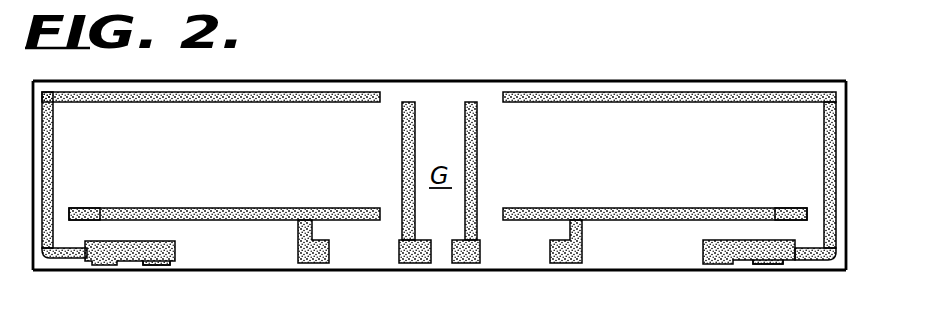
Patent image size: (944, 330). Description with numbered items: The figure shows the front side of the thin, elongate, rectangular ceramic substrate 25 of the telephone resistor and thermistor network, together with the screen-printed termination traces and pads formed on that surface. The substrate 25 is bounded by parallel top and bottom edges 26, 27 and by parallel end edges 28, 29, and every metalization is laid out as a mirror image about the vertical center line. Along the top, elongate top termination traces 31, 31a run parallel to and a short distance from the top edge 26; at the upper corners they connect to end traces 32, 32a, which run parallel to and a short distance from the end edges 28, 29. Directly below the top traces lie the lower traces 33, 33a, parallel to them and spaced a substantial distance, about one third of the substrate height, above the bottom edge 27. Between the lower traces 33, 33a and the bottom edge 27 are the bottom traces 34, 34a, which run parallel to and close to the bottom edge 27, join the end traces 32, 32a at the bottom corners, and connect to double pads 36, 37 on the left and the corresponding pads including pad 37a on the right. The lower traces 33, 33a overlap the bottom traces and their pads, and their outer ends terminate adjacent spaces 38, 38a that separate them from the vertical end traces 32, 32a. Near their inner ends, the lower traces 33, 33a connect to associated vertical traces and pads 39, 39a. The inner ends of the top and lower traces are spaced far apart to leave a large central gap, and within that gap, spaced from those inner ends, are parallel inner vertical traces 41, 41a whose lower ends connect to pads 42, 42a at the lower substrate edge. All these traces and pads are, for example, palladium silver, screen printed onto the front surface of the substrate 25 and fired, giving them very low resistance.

The substrate 25 is at (643, 260).
The top edge 26 is at (607, 81).
The bottom edge 27 is at (540, 273).
The end edge 28 is at (29, 94).
The end edge 29 is at (848, 94).
The top termination trace 31 is at (217, 102).
The top termination trace 31a is at (634, 102).
The end trace 32 is at (54, 141).
The end trace 32a is at (824, 136).
The lower trace 33 is at (243, 208).
The lower trace 33a is at (634, 182).
The bottom trace 34 is at (70, 262).
The bottom trace 34a is at (818, 262).
The pad 36 is at (108, 265).
The pad 37 is at (168, 265).
The pad 37a is at (722, 265).
The space 38 is at (63, 213).
The space 38a is at (816, 212).
The vertical trace and pad 39 is at (315, 263).
The vertical trace and pad 39a is at (571, 263).
The inner vertical trace 41 is at (402, 133).
The inner vertical trace 41a is at (478, 143).
The pad 42 is at (419, 263).
The pad 42a is at (455, 263).